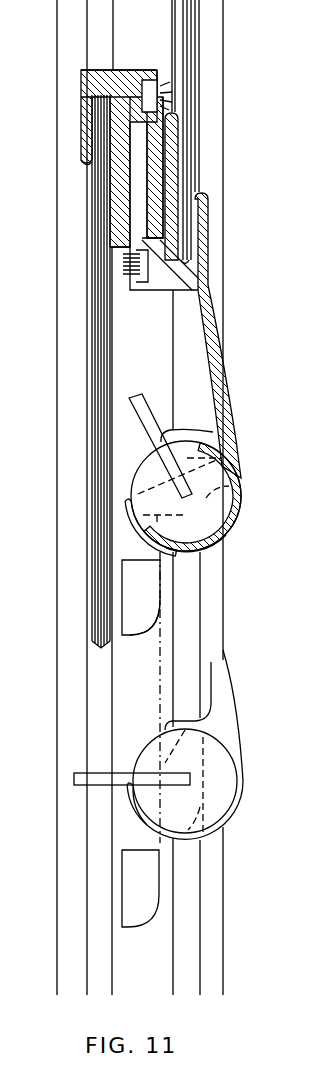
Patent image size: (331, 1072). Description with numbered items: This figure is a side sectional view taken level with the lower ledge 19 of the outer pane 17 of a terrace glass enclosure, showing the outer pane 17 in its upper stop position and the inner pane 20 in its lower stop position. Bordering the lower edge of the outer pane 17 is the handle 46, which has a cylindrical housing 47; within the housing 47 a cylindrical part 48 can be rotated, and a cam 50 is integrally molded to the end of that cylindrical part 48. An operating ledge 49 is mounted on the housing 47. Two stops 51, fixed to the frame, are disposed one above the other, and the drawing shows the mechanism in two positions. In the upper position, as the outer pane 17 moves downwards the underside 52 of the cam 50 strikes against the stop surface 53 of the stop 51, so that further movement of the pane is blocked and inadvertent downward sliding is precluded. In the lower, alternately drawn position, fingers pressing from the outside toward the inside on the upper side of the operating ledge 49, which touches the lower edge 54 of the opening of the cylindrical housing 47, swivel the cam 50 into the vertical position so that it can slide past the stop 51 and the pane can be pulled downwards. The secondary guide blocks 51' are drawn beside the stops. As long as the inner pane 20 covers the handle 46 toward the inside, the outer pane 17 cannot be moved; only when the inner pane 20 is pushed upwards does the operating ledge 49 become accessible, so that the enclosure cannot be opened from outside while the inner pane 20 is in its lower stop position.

The outer pane 17 is at (200, 47).
The lower ledge 19 is at (187, 273).
The inner pane 20 is at (110, 497).
The handle 46 is at (226, 396).
The cylindrical housing 47 is at (235, 505).
The cylindrical part 48 is at (222, 518).
The operating ledge 49 is at (143, 396).
The cam 50 is at (207, 497).
The stop 51 is at (131, 578).
The guide block 51' is at (165, 772).
The underside of the cam 52 is at (153, 527).
The stop surface 53 is at (125, 557).
The lower edge of the opening 54 is at (128, 798).